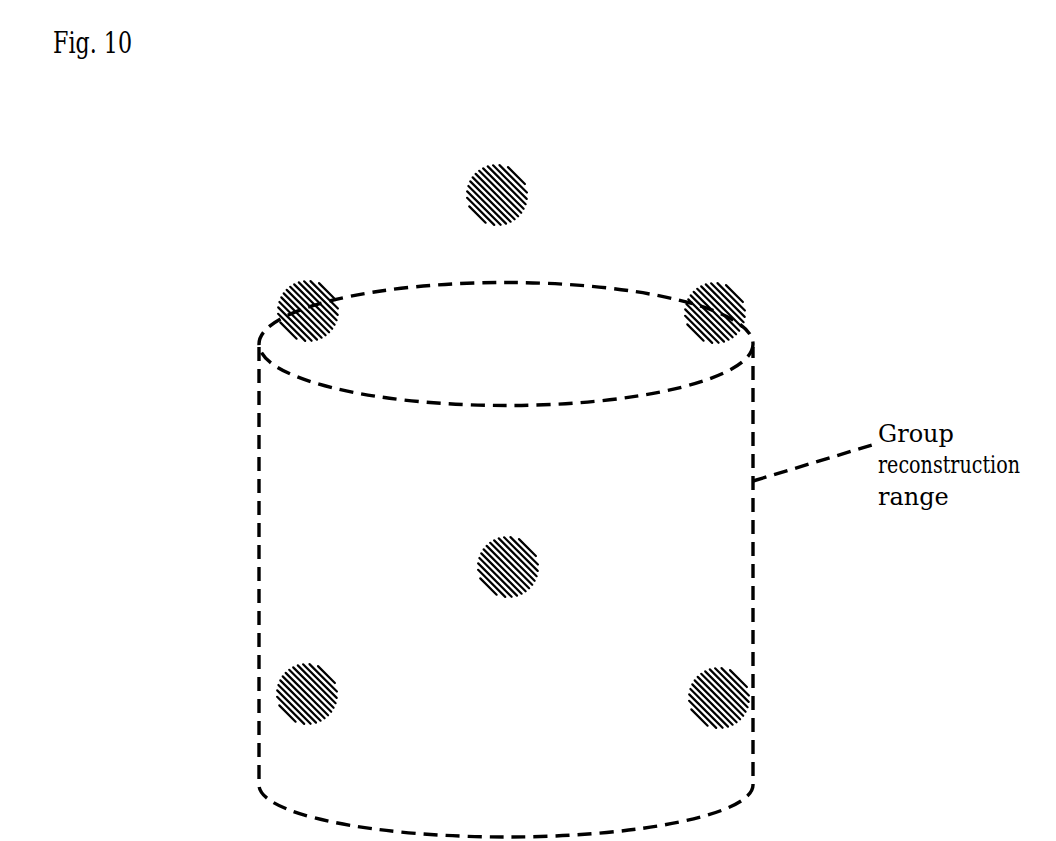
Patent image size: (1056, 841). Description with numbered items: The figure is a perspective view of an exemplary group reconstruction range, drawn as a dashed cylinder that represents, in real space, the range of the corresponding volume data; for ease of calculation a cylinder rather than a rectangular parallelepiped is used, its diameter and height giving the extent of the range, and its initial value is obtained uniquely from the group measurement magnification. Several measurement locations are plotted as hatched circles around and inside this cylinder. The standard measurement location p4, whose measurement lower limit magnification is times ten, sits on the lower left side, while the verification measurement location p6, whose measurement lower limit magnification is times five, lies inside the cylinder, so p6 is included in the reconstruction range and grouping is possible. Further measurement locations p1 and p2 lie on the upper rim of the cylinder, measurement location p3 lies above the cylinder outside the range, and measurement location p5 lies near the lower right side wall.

The measurement location p1 is at (288, 306).
The measurement location p2 is at (734, 303).
The measurement location p3 is at (497, 175).
The standard measurement location p4 is at (239, 709).
The measurement location p5 is at (744, 692).
The verification measurement location p6 is at (577, 572).